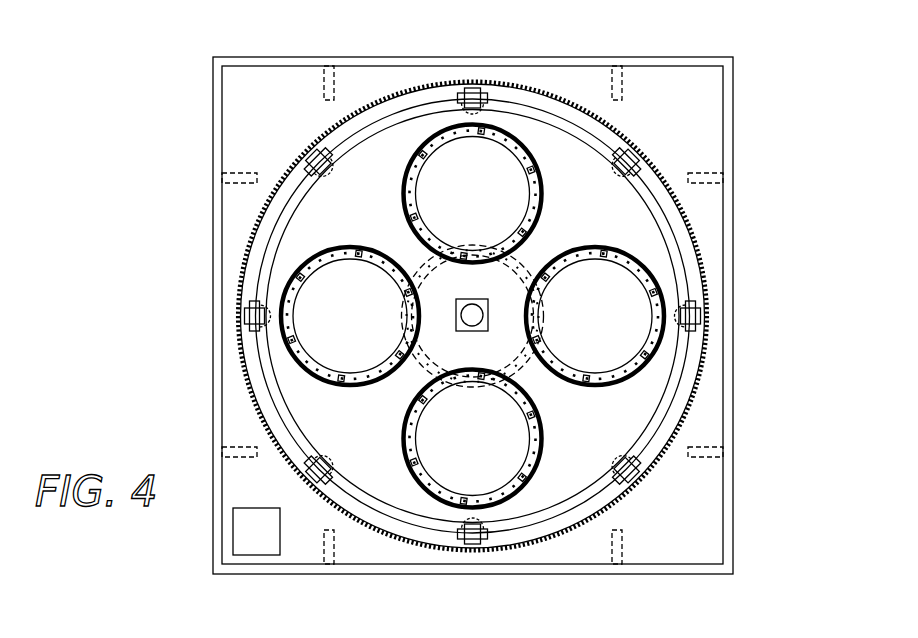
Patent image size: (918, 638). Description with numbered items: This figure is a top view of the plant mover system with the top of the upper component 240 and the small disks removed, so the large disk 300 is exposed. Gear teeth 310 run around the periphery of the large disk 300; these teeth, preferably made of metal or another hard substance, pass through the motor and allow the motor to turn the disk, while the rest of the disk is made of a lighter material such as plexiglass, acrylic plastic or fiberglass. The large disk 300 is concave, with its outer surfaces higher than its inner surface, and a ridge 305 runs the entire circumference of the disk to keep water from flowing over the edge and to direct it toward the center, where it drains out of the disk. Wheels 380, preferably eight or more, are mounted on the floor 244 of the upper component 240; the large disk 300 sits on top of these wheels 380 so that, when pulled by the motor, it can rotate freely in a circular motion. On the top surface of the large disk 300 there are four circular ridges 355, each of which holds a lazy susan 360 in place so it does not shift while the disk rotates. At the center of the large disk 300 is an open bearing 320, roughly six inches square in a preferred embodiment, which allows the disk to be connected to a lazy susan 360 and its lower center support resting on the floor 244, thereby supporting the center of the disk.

The upper component 240 is at (733, 547).
The floor 244 is at (713, 498).
The large disk 300 is at (652, 385).
The ridge 305 is at (261, 222).
The gear teeth 310 is at (692, 223).
The open bearing 320 is at (455, 300).
The circular ridges 355 is at (428, 137).
The lazy susan 360 is at (510, 127).
The wheels 380 is at (478, 86).